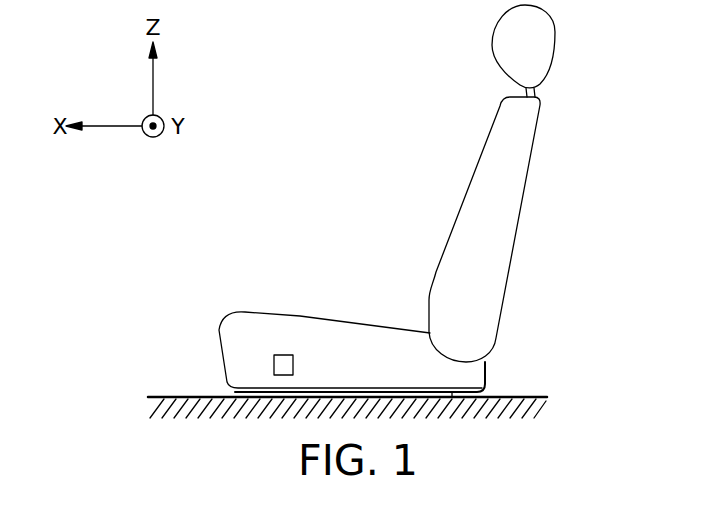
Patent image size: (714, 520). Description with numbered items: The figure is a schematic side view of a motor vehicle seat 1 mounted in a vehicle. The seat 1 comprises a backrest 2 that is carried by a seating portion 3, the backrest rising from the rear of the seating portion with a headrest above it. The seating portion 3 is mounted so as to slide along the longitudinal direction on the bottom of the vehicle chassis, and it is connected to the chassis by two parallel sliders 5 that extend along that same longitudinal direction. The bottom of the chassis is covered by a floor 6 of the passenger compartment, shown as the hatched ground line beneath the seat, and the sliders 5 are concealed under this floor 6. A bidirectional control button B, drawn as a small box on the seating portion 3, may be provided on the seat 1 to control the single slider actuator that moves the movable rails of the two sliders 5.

The motor vehicle seat 1 is at (382, 155).
The backrest 2 is at (508, 203).
The seating portion 3 is at (265, 330).
The bidirectional control button B is at (286, 362).
The sliders 5 is at (500, 388).
The floor 6 is at (165, 396).